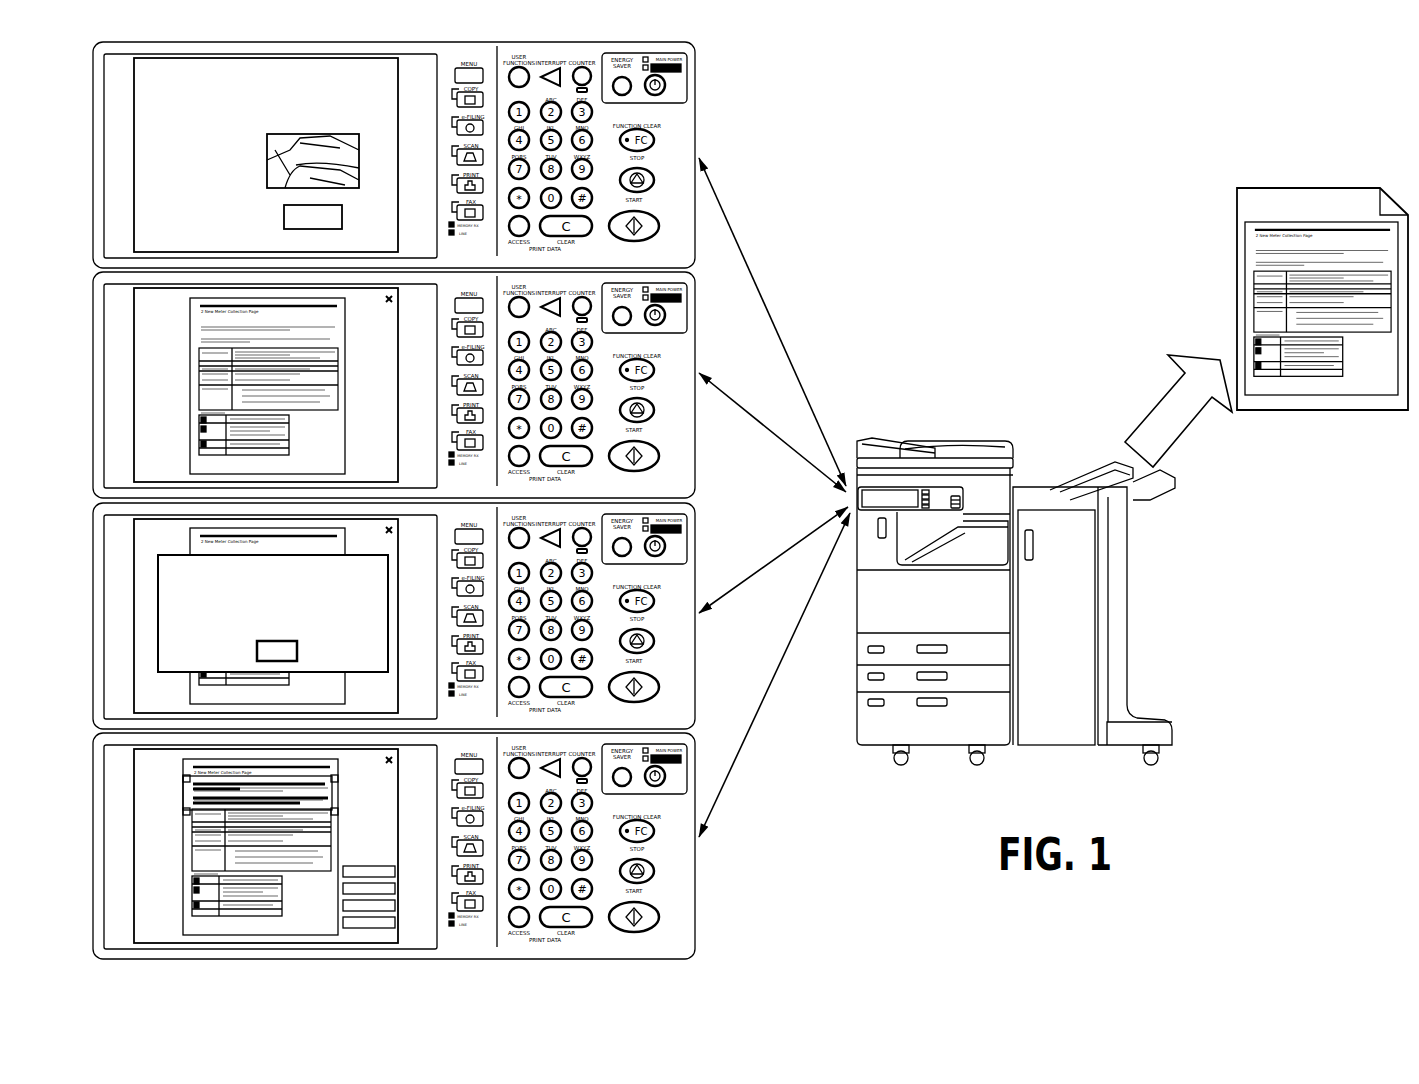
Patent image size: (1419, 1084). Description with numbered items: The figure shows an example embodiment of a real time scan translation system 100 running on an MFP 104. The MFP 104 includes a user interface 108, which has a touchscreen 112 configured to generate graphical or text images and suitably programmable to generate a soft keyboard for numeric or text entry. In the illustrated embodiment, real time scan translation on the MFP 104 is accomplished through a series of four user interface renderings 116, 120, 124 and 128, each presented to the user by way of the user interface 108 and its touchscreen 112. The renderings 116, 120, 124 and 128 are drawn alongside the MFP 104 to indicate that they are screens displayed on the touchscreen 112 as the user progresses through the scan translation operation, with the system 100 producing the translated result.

The real time scan translation system 100 is at (1296, 150).
The MFP 104 is at (1125, 637).
The user interface 108 is at (968, 493).
The touchscreen 112 is at (903, 497).
The user interface rendering 116 is at (695, 121).
The user interface rendering 120 is at (695, 305).
The user interface rendering 124 is at (695, 555).
The user interface rendering 128 is at (695, 877).